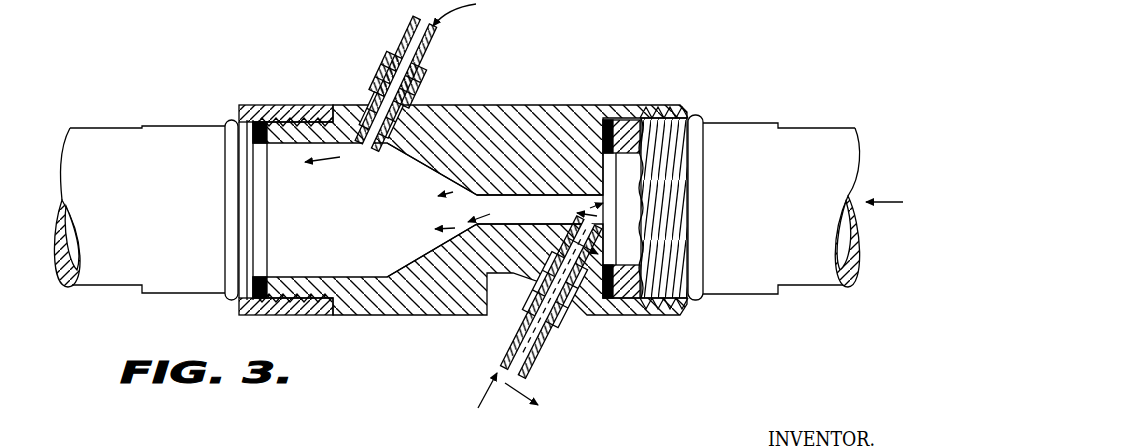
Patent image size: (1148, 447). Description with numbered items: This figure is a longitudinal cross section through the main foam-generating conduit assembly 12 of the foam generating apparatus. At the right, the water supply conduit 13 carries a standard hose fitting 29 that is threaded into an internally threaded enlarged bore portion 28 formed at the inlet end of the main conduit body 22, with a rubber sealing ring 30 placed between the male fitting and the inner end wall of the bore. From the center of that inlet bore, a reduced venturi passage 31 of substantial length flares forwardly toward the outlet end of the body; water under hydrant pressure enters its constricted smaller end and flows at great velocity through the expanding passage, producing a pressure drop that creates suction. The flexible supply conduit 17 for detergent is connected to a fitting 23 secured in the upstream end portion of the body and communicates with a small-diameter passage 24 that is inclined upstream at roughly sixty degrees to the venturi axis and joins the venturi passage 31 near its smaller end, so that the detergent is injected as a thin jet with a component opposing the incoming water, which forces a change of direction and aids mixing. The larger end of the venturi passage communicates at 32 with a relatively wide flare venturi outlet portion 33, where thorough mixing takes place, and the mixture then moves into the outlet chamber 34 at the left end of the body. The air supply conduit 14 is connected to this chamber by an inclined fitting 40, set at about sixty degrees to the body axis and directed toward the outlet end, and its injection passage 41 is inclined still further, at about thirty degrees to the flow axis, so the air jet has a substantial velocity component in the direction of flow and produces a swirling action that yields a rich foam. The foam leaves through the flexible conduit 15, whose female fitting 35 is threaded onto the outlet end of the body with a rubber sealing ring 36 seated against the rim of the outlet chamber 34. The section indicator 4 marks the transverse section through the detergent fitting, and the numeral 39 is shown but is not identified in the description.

The section line 4- 4 is at (538, 320).
The main foam-generating conduit assembly 12 is at (495, 182).
The water supply conduit 13 is at (823, 140).
The air supply conduit 14 is at (403, 92).
The flexible conduit 15 is at (97, 143).
The flexible supply conduit 17 is at (498, 352).
The main conduit body 22 is at (566, 118).
The fitting 23 is at (524, 323).
The passage 24 is at (504, 192).
The internally threaded enlarged bore portion 28 is at (658, 115).
The hose fitting 29 is at (699, 120).
The rubber sealing ring 30 is at (617, 118).
The venturi passage 31 is at (540, 131).
The communication point 32 is at (470, 232).
The venturi outlet portion 33 is at (437, 167).
The outlet chamber 34 is at (322, 243).
The female fitting 35 is at (248, 104).
The rubber sealing ring 36 is at (257, 118).
The hose 39 is at (192, 7).
The inclined fitting 40 is at (368, 108).
The injection passage 41 is at (366, 148).